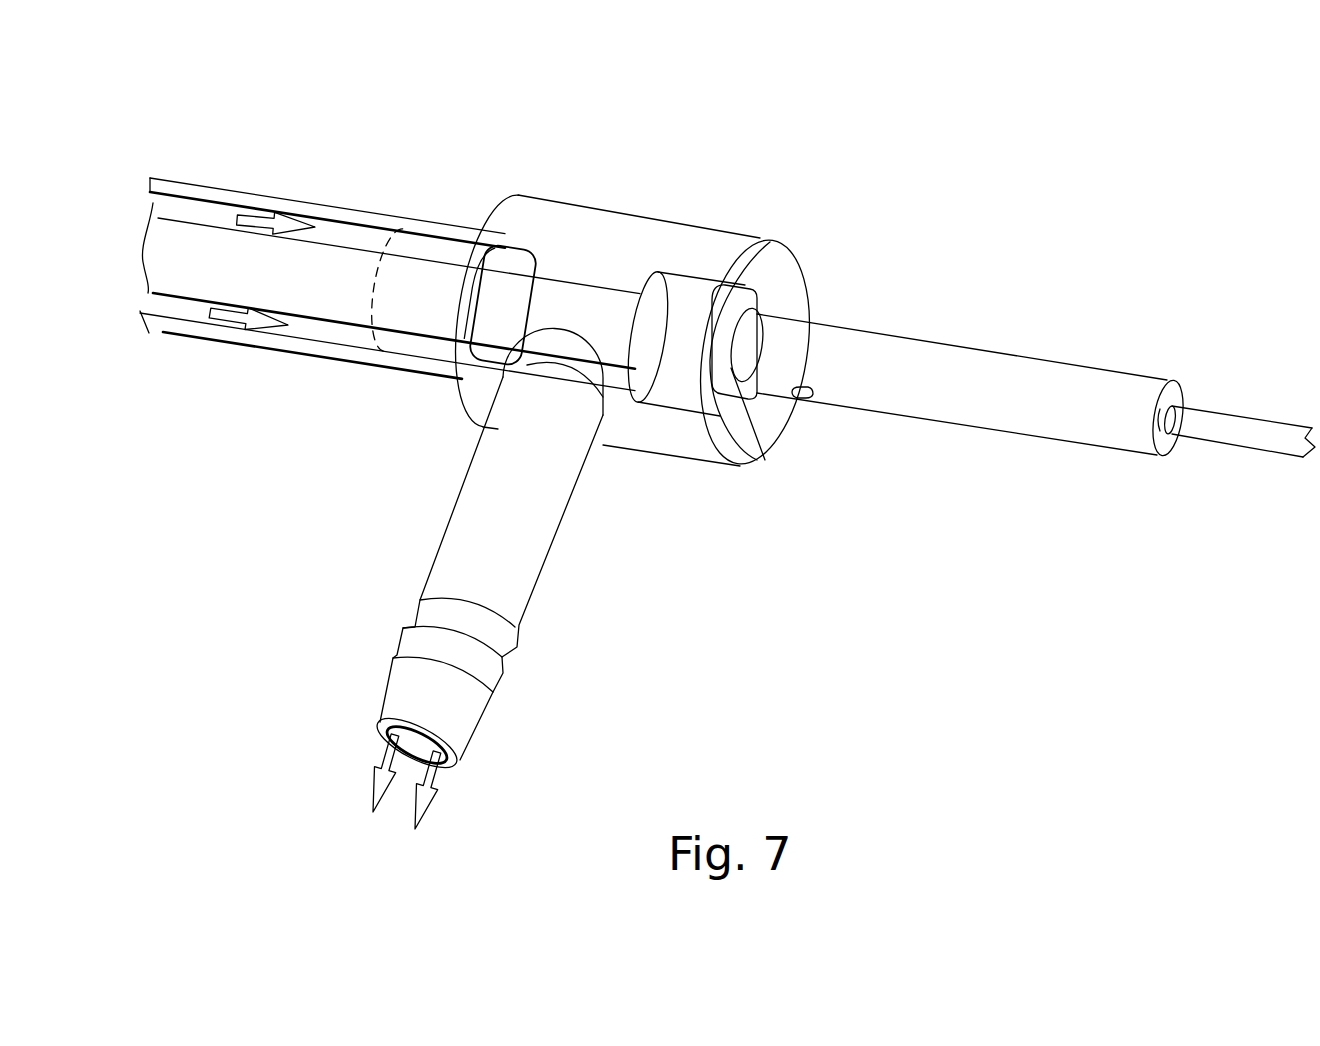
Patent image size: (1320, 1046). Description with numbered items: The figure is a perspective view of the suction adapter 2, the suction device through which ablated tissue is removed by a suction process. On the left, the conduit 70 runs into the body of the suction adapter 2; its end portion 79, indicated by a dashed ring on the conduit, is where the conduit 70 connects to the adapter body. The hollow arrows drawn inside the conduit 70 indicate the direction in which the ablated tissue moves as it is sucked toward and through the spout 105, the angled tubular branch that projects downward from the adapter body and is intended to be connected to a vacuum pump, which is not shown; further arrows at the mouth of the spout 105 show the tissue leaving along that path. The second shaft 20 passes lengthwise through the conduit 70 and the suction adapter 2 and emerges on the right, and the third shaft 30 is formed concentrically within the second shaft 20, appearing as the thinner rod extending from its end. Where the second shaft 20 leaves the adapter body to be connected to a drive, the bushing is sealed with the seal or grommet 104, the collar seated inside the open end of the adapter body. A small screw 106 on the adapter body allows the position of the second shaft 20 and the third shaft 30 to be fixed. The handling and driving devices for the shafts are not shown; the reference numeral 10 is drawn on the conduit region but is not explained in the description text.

The suction adapter 2 is at (543, 215).
The inner tube 10 is at (260, 353).
The second shaft 20 is at (195, 243).
The third shaft 30 is at (1250, 427).
The conduit 70 is at (170, 307).
The end portion 79 is at (390, 227).
The seal or grommet 104 is at (697, 287).
The spout 105 is at (522, 592).
The screw 106 is at (802, 417).